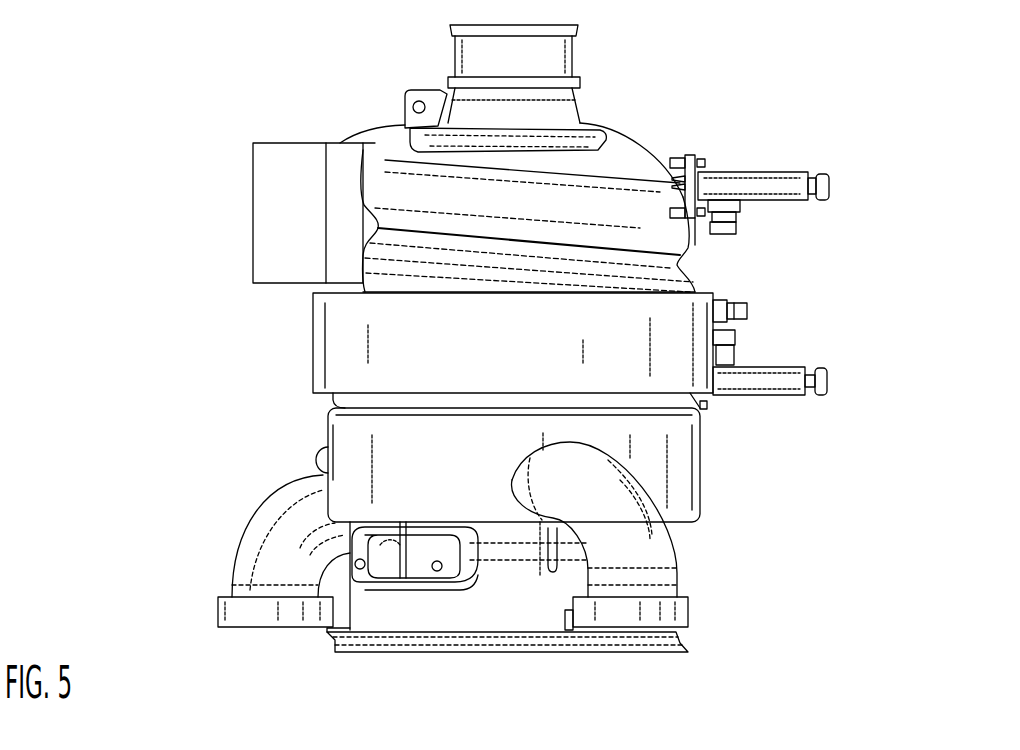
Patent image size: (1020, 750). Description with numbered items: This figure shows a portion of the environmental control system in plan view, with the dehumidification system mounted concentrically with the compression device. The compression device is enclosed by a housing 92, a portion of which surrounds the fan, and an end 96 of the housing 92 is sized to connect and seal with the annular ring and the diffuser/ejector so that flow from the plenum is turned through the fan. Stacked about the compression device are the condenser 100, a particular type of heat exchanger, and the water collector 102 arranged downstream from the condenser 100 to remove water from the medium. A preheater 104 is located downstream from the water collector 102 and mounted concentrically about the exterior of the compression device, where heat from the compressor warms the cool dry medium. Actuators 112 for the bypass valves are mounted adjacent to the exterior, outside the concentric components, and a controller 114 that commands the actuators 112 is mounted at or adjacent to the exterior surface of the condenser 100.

The housing 92 is at (532, 573).
The end 96 is at (367, 655).
The condenser 100 is at (408, 190).
The water collector 102 is at (387, 334).
The preheater 104 is at (357, 450).
The actuator 112 is at (767, 380).
The controller 114 is at (292, 197).